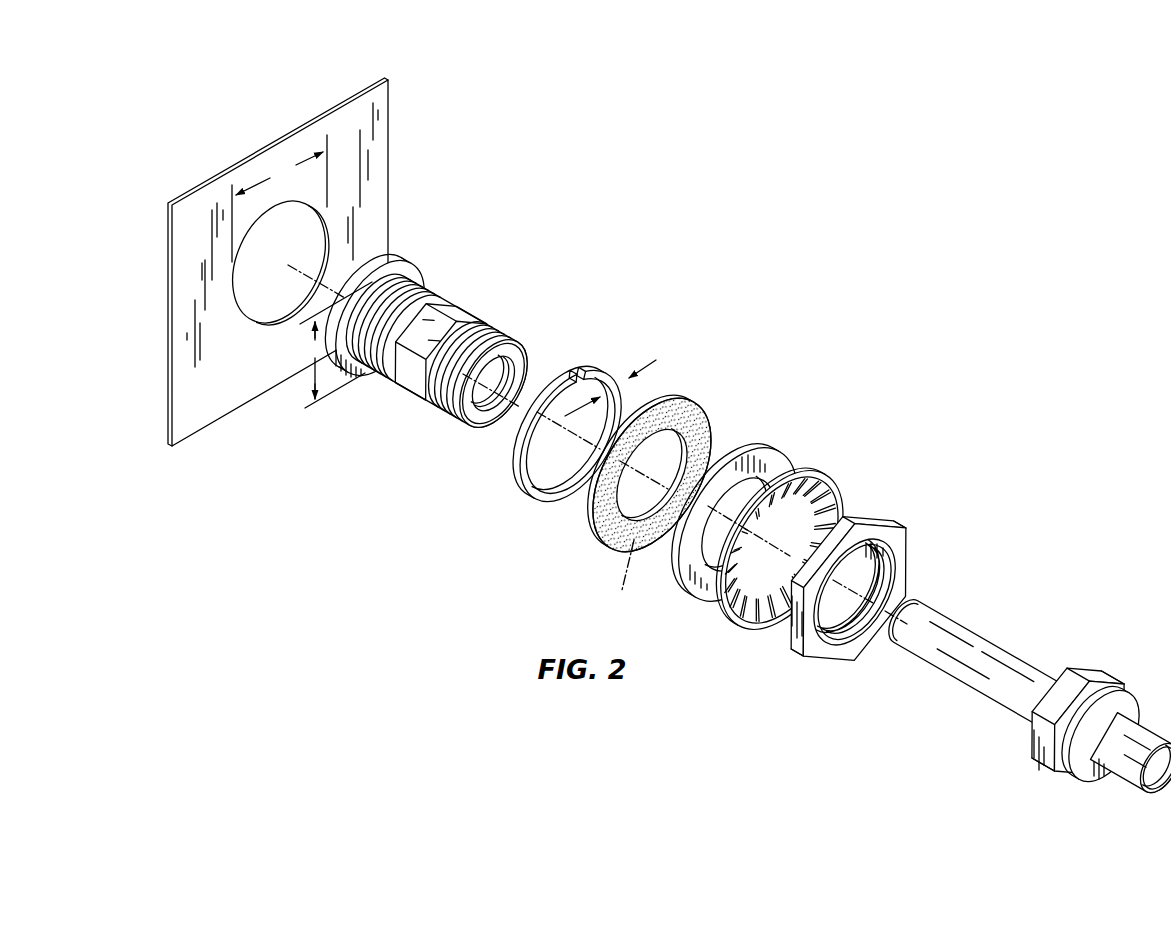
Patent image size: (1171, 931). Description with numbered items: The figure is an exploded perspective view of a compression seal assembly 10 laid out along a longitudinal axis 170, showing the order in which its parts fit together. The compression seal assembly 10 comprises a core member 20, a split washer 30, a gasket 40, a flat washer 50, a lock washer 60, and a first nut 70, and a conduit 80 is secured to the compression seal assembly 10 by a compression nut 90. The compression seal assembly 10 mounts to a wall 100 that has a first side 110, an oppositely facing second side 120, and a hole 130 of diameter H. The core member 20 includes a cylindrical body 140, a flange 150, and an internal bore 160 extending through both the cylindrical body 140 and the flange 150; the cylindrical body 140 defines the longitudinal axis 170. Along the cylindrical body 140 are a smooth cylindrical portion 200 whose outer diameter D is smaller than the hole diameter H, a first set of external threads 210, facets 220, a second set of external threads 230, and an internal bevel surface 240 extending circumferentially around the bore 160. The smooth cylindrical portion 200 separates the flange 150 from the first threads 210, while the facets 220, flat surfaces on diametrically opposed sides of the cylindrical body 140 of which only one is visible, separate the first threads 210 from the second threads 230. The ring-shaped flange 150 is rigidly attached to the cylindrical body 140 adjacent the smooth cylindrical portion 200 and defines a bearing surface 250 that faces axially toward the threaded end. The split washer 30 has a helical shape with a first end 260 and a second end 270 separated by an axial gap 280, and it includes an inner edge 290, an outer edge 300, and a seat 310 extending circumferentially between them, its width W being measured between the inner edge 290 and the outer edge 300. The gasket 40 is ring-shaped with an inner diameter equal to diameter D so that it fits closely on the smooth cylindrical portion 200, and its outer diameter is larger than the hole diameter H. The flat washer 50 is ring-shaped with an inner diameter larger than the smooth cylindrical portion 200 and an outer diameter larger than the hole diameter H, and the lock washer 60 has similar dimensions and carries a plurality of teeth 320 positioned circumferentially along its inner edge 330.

The compression seal assembly 10 is at (669, 440).
The core member 20 is at (426, 324).
The split washer 30 is at (565, 401).
The gasket 40 is at (690, 414).
The flat washer 50 is at (747, 447).
The lock washer 60 is at (787, 544).
The first nut 70 is at (877, 522).
The conduit 80 is at (987, 643).
The compression nut 90 is at (1098, 672).
The wall 100 is at (327, 251).
The first side 110 is at (278, 253).
The second side 120 is at (343, 133).
The hole 130 is at (257, 318).
The cylindrical body 140 is at (424, 333).
The flange 150 is at (387, 294).
The internal bore 160 is at (488, 404).
The longitudinal axis 170 is at (853, 287).
The smooth cylindrical portion 200 is at (398, 275).
The first set of external threads 210 is at (452, 323).
The facets 220 is at (470, 335).
The second set of external threads 230 is at (470, 362).
The internal bevel surface 240 is at (497, 418).
The bearing surface 250 is at (420, 274).
The first end 260 is at (572, 362).
The second end 270 is at (600, 365).
The axial gap 280 is at (580, 368).
The inner edge 290 is at (567, 470).
The outer edge 300 is at (564, 411).
The seat 310 is at (527, 458).
The teeth 320 is at (835, 492).
The inner edge 330 is at (777, 627).